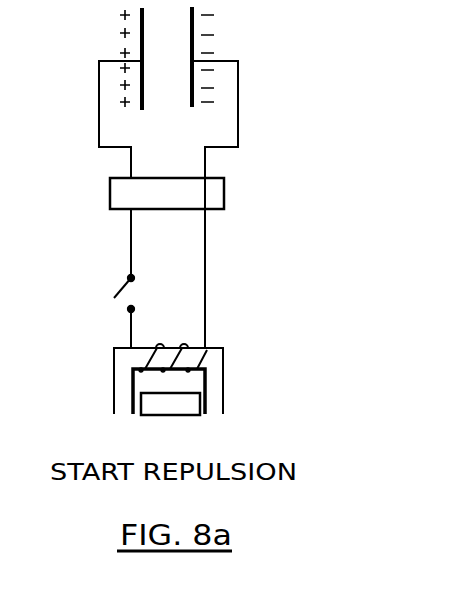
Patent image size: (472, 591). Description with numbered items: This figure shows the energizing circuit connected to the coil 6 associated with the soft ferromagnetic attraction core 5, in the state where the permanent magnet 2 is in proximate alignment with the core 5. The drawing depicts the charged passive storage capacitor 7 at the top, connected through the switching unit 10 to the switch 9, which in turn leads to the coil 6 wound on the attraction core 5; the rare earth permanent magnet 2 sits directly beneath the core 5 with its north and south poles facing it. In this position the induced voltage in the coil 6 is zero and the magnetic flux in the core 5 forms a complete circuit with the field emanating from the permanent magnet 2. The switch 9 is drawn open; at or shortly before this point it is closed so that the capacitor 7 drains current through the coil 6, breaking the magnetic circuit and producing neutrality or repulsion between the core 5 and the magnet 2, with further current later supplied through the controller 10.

The passive storage capacitor 7 is at (138, 25).
The switching unit 10 is at (110, 197).
The switch 9 is at (120, 290).
The attraction core 5 is at (113, 352).
The coil 6 is at (165, 370).
The rare earth permanent magnet 2 is at (158, 415).